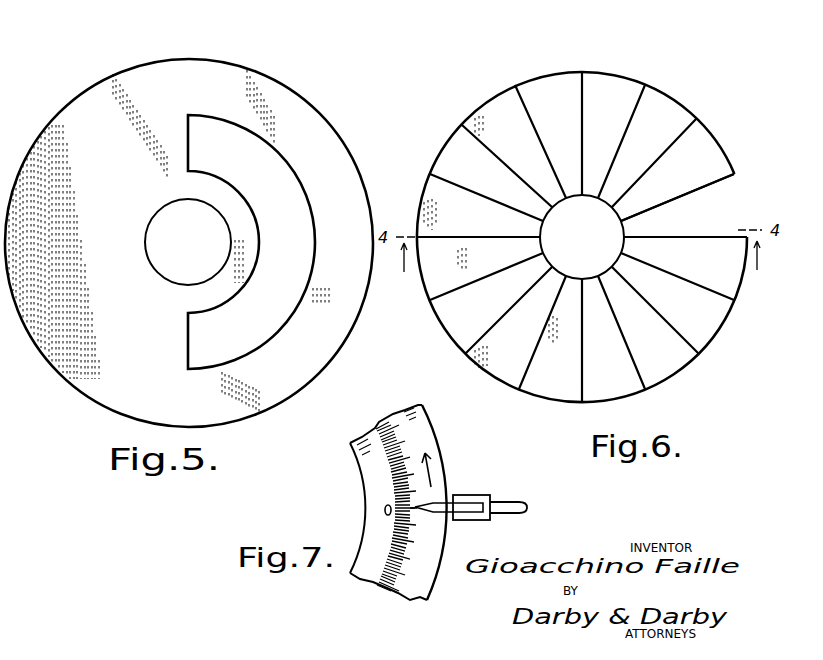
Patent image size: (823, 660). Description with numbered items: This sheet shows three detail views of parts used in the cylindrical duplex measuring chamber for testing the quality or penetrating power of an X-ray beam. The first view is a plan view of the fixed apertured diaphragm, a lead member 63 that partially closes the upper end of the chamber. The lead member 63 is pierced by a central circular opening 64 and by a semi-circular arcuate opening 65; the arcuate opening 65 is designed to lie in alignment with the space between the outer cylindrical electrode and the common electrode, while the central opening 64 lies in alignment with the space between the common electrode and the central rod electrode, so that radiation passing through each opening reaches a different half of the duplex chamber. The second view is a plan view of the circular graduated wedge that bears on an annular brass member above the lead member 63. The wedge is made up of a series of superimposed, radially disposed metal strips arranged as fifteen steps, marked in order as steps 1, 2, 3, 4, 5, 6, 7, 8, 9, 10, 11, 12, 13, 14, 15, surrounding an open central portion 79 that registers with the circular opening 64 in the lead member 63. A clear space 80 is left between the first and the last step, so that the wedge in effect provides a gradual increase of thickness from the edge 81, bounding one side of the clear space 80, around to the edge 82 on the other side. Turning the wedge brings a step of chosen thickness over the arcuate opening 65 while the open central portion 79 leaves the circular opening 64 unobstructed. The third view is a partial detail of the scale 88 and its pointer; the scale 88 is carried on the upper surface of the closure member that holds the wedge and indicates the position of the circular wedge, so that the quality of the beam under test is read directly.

In FIG. 5, the lead member 63 is at (282, 85).
In FIG. 5, the circular opening 64 is at (188, 242).
In FIG. 5, the semi-circular arcuate opening 65 is at (273, 172).
In FIG. 6, the open central portion 79 is at (582, 237).
In FIG. 6, the clear space 80 is at (723, 202).
In FIG. 6, the edge 81 is at (717, 233).
In FIG. 6, the edge 82 is at (708, 178).
In FIG. 7, the scale 88 is at (403, 540).
In FIG. 6, the sector 1 is at (707, 258).
In FIG. 6, the sector 2 is at (685, 300).
In FIG. 6, the sector 3 is at (650, 333).
In FIG. 6, the sector 4 is at (607, 353).
In FIG. 6, the sector 5 is at (565, 350).
In FIG. 6, the sector 6 is at (523, 330).
In FIG. 6, the sector 7 is at (498, 297).
In FIG. 6, the sector 8 is at (480, 260).
In FIG. 6, the sector 9 is at (480, 217).
In FIG. 6, the sector 10 is at (486, 177).
In FIG. 6, the sector 11 is at (516, 140).
In FIG. 6, the sector 12 is at (559, 123).
In FIG. 6, the sector 13 is at (604, 122).
In FIG. 6, the sector 14 is at (646, 137).
In FIG. 6, the sector 15 is at (681, 163).